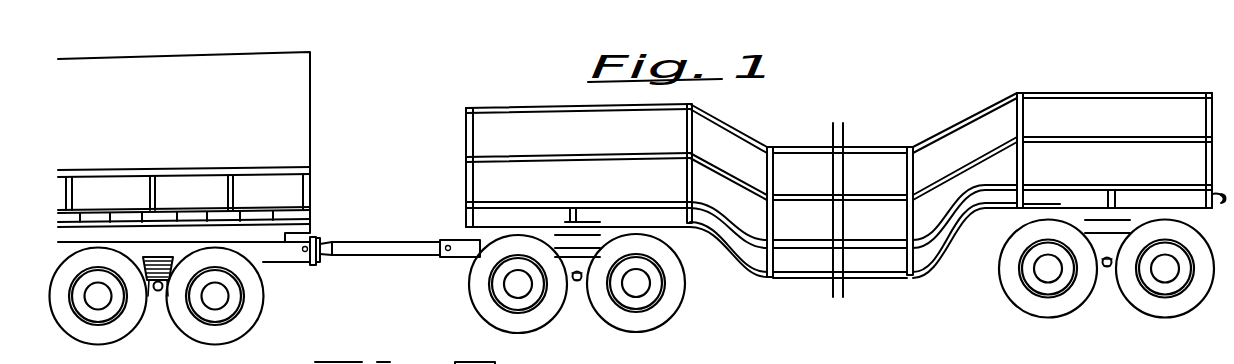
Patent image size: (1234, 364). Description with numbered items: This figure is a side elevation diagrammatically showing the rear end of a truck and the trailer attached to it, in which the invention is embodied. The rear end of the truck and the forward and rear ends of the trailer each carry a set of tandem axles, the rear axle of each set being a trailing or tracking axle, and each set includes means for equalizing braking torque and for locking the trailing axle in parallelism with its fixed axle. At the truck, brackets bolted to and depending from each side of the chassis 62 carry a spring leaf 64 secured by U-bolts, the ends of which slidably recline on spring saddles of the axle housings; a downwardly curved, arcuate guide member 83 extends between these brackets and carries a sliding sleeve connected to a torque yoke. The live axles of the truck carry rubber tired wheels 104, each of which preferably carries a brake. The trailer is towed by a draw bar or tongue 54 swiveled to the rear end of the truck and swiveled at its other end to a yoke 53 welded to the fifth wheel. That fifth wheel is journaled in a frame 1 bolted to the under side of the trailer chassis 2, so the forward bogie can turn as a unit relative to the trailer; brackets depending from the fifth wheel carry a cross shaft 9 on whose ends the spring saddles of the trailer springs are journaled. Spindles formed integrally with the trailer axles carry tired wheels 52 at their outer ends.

The frame 1 is at (1058, 215).
The trailer chassis 2 is at (943, 254).
The cross shaft 9 is at (580, 283).
The tired wheels 52 is at (487, 316).
The yoke 53 is at (458, 253).
The draw bar or tongue 54 is at (388, 254).
The chassis 62 is at (298, 266).
The spring leaf 64 is at (165, 257).
The arcuate guide member 83 is at (156, 292).
The rubber tired wheels 104 is at (242, 328).